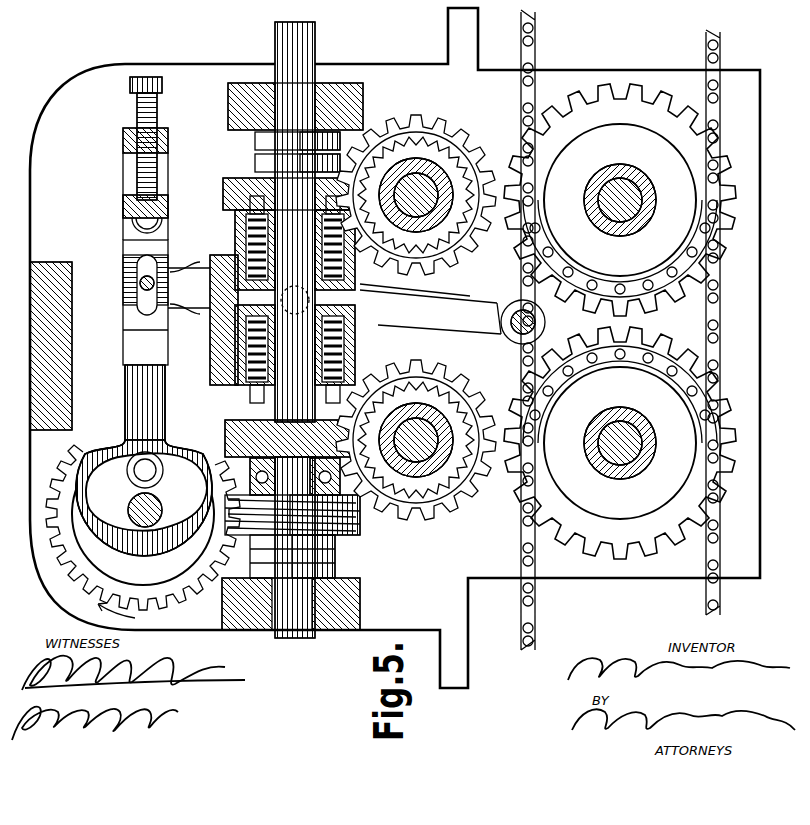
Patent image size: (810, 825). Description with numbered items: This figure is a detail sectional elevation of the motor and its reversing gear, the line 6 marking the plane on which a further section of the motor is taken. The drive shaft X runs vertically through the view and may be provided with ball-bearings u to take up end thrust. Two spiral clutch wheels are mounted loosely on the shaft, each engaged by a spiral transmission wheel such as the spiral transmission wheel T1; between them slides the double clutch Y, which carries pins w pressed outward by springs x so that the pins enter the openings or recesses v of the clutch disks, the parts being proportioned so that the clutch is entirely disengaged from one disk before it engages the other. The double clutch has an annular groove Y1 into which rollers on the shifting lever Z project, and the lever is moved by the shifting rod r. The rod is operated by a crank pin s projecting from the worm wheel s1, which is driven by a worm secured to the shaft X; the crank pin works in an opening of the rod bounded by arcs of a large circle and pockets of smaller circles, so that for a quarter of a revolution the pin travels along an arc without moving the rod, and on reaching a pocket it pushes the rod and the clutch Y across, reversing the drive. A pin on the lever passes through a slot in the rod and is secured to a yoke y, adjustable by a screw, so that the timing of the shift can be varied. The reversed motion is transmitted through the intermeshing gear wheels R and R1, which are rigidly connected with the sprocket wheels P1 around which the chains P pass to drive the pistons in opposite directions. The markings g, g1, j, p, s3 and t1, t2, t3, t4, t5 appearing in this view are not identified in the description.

The section line 6 is at (125, 240).
The drive shaft X is at (287, 638).
The ball-bearings u is at (292, 356).
The openings or recesses v is at (240, 182).
The pins w is at (244, 228).
The springs x is at (230, 245).
The double clutch Y is at (218, 325).
The annular groove Y1 is at (199, 288).
The crank pin s is at (265, 523).
The spiral transmission wheel T1 is at (412, 112).
The gear hub g1 is at (420, 170).
The shifting rod r is at (420, 525).
The shifting lever Z is at (480, 330).
The gear wheel R is at (515, 340).
The gear wheel R1 is at (515, 300).
The chain P is at (596, 172).
The sprocket wheels P1 is at (585, 432).
The chain wheel hub j is at (632, 176).
The drive chain p is at (536, 48).
The adjusting screw g is at (136, 88).
The yoke y is at (122, 140).
The lever bar slot t3 is at (125, 275).
The lever bar t2 is at (125, 330).
The lever bar lower portion t1 is at (130, 392).
The lever boss t5 is at (88, 488).
The pin t4 is at (130, 478).
The worm wheel s1 is at (155, 540).
The worm wheel s3 is at (135, 545).